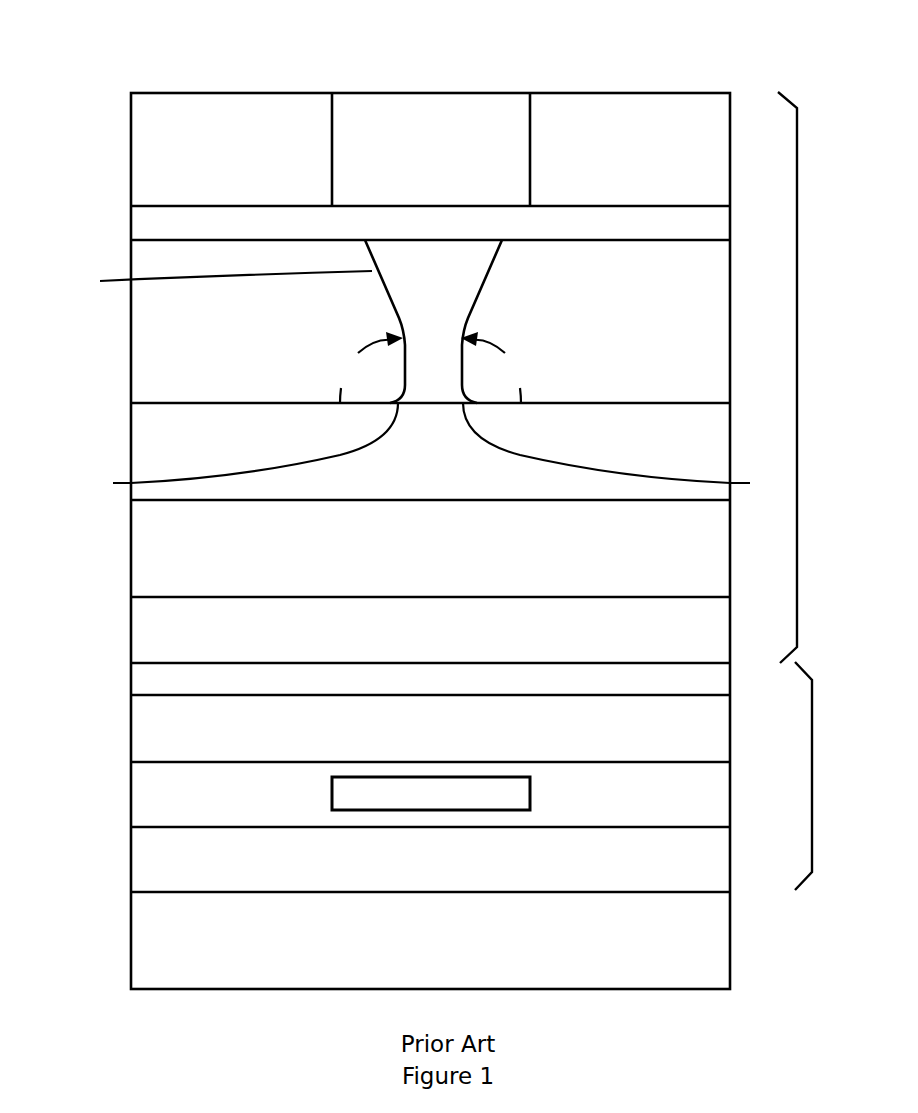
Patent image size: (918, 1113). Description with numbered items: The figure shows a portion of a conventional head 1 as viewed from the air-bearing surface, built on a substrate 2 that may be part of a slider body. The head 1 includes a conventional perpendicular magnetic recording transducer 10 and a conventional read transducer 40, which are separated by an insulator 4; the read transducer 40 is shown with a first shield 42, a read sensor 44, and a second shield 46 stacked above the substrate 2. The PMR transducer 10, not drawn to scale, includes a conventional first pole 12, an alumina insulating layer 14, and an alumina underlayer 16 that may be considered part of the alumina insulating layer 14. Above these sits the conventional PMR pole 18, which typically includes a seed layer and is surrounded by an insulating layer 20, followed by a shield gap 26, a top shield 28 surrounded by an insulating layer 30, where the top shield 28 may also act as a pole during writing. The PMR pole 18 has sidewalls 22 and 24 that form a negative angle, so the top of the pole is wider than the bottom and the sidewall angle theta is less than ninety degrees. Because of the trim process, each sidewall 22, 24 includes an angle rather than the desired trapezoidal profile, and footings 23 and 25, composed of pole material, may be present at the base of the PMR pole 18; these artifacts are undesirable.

The conventional head 1 is at (430, 504).
The substrate 2 is at (131, 955).
The insulator 4 is at (131, 680).
The conventional perpendicular magnetic recording (PMR) transducer 10 is at (797, 383).
The conventional first pole 12 is at (730, 630).
The alumina insulating layer 14 is at (131, 578).
The alumina underlayer 16 is at (730, 438).
The conventional PMR pole 18 is at (398, 239).
The insulating layer 20 is at (131, 372).
The sidewall 22 is at (492, 273).
The footing 23 is at (624, 449).
The sidewall 24 is at (221, 293).
The footing 25 is at (235, 449).
The shield gap 26 is at (150, 206).
The top shield 28 is at (447, 92).
The insulating layer 30 is at (131, 108).
The conventional read transducer 40 is at (812, 777).
The first shield 42 is at (730, 860).
The read sensor 44 is at (332, 793).
The second shield 46 is at (730, 728).